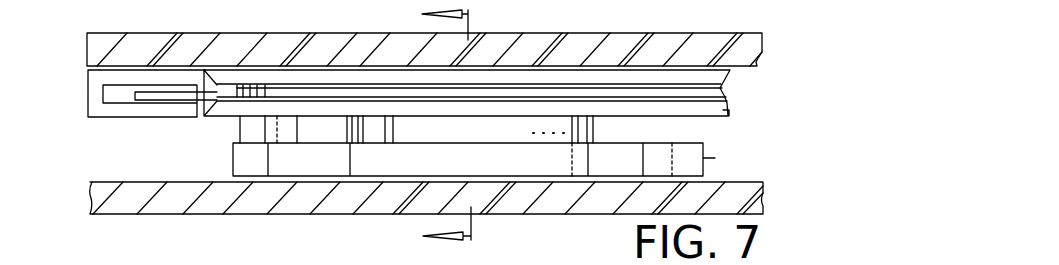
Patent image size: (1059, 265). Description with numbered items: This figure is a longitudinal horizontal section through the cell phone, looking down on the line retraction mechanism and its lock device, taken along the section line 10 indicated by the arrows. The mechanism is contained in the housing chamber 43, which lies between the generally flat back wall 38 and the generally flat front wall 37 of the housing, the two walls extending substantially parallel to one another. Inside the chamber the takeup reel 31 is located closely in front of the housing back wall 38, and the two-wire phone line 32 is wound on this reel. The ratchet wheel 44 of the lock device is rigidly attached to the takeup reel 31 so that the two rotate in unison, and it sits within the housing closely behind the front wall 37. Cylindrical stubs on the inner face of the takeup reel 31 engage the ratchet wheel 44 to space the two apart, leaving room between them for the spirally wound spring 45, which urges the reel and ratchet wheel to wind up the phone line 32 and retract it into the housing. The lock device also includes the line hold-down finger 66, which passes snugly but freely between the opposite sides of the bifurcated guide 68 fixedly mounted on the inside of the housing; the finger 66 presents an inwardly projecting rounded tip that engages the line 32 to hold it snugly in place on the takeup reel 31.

The section line 10 is at (464, 126).
The takeup reel 31 is at (730, 112).
The two-wire phone line 32 is at (713, 92).
The front wall 37 is at (315, 206).
The back wall 38 is at (657, 42).
The housing chamber 43 is at (127, 159).
The ratchet wheel 44 is at (556, 162).
The spiral spring 45 is at (598, 130).
The line hold-down finger 66 is at (194, 96).
The bifurcated guide 68 is at (113, 113).